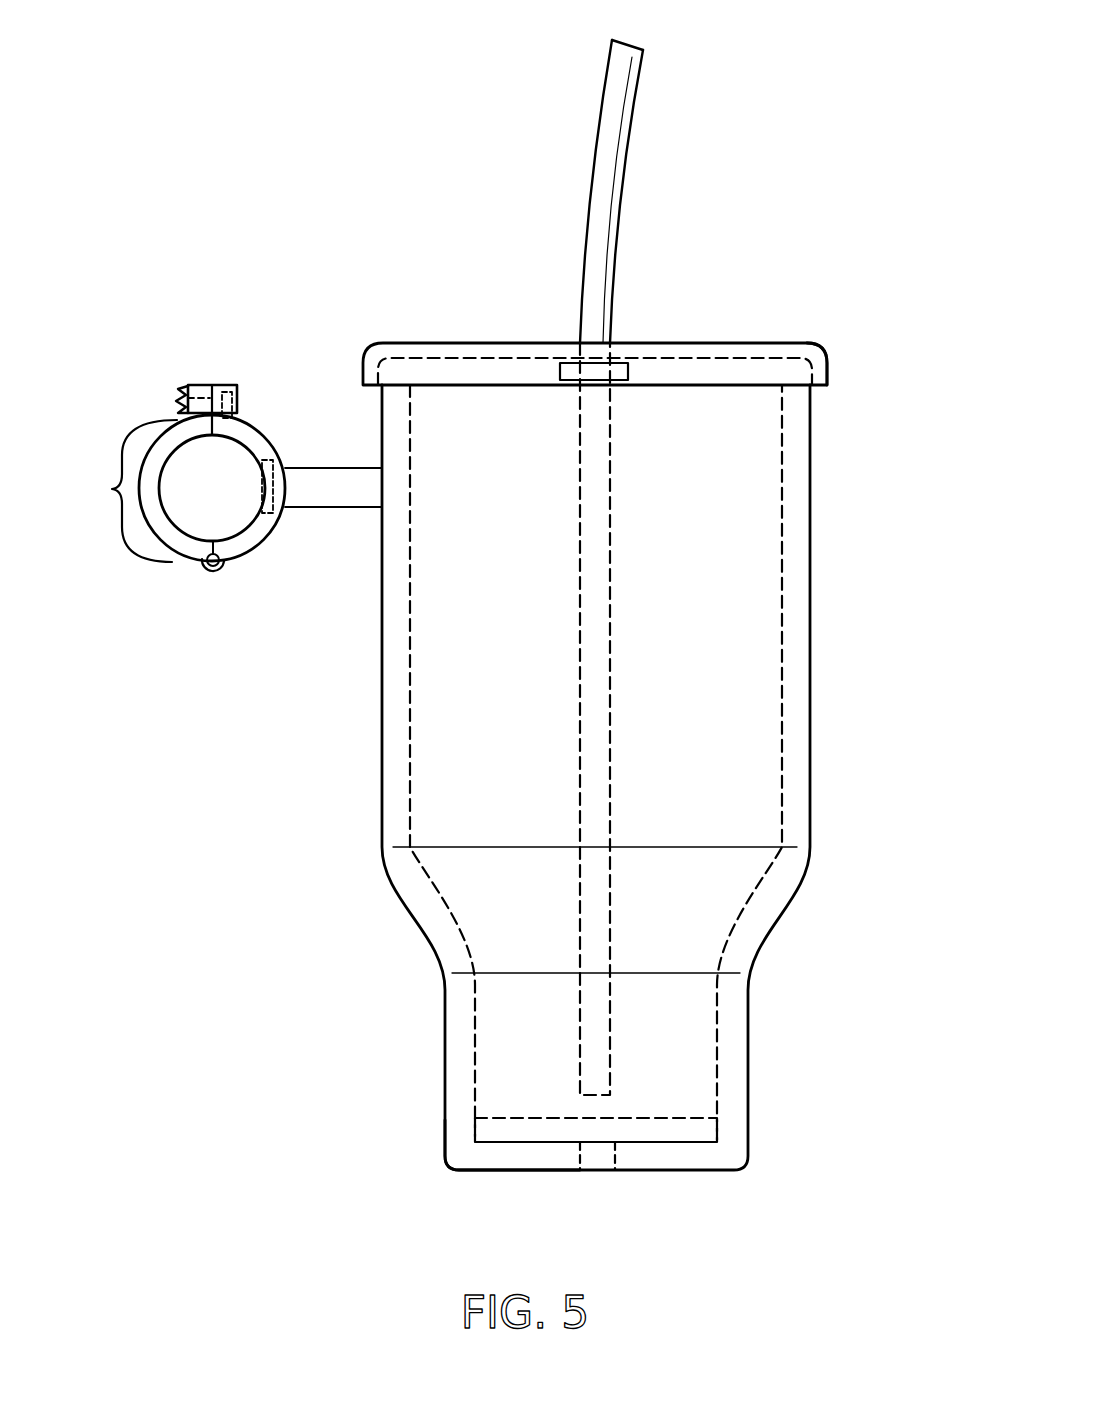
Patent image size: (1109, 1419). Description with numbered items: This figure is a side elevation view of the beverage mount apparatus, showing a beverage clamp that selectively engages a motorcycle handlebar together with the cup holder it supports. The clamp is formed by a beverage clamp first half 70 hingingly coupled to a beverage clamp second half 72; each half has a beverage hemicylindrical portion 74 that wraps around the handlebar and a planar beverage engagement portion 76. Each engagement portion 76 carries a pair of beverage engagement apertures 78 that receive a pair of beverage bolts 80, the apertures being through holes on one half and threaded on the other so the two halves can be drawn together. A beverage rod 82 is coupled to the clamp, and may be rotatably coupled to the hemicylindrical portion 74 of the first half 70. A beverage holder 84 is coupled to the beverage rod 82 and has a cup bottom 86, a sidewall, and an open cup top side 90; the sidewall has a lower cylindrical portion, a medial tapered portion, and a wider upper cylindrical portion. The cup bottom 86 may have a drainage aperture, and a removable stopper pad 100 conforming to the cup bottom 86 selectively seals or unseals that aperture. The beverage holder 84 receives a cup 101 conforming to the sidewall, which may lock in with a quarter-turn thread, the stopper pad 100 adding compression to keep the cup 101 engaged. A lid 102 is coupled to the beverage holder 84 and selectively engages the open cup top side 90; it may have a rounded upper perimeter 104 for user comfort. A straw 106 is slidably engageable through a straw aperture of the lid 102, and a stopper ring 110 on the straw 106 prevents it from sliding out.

The beverage clamp first half 70 is at (240, 548).
The beverage clamp second half 72 is at (188, 547).
The beverage hemicylindrical portion 74 is at (121, 491).
The planar beverage engagement portion 76 is at (180, 403).
The beverage engagement apertures 78 is at (203, 397).
The beverage bolts 80 is at (233, 407).
The beverage rod 82 is at (330, 493).
The beverage holder 84 is at (382, 425).
The cup bottom 86 is at (490, 1163).
The open cup top side 90 is at (600, 1160).
The removable stopper pad 100 is at (697, 1127).
The cup 101 is at (780, 630).
The lid 102 is at (770, 343).
The rounded upper perimeter 104 is at (823, 353).
The straw 106 is at (600, 160).
The stopper ring 110 is at (620, 373).